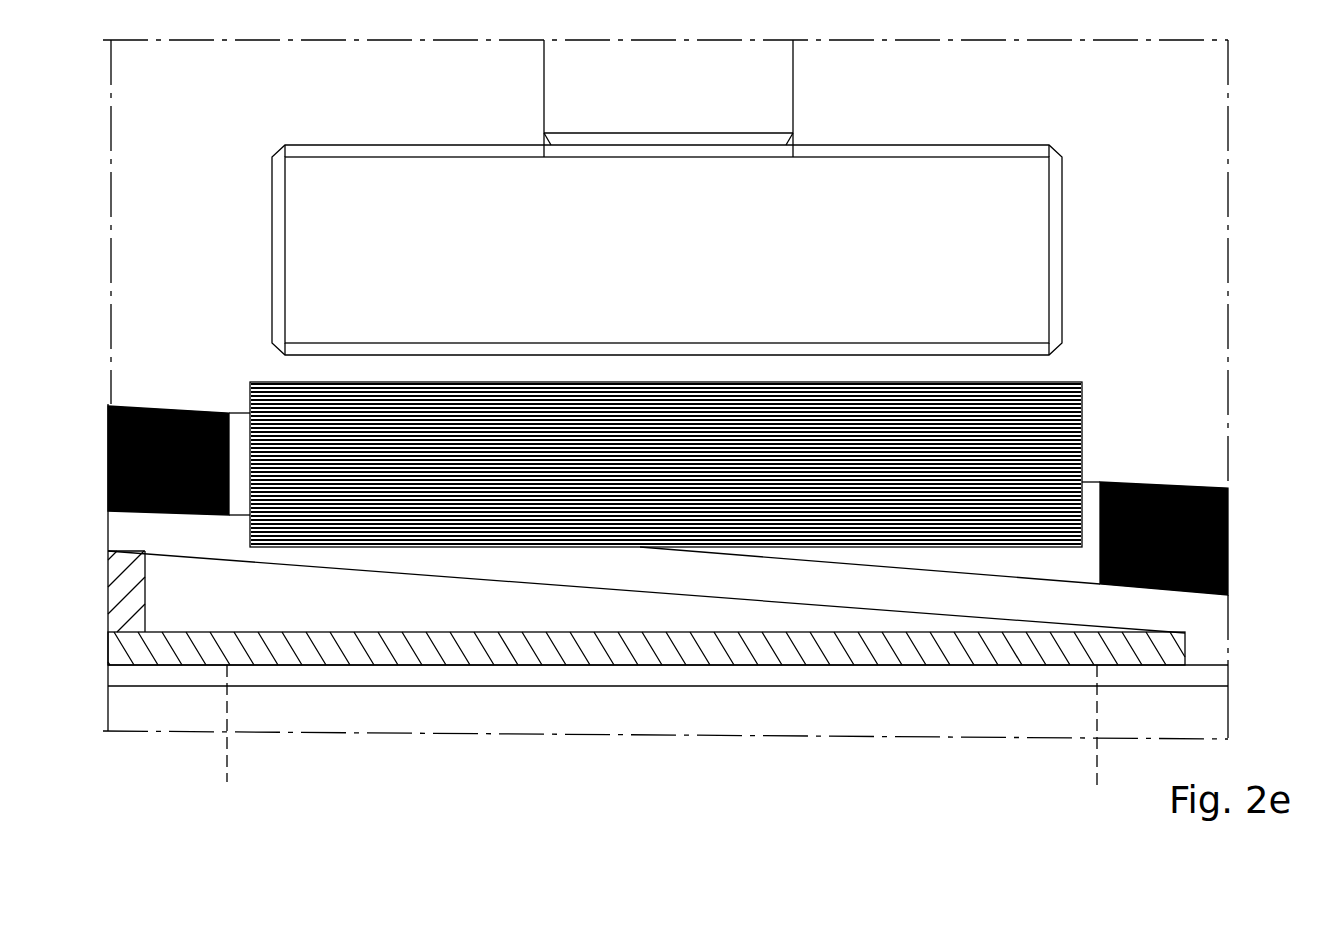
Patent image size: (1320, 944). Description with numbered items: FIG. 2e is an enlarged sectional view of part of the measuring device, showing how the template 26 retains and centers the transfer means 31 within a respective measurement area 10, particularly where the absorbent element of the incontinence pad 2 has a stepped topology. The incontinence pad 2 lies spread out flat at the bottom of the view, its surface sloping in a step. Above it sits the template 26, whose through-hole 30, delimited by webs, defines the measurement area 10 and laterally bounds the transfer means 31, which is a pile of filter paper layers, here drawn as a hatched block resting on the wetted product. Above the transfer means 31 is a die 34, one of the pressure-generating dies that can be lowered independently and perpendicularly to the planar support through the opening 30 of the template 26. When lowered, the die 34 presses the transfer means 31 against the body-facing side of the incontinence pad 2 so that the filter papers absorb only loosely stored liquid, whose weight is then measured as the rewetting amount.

The incontinence pad 2 is at (183, 665).
The measurement area 10 is at (1097, 776).
The template 26 is at (172, 405).
The through-hole 30 is at (1097, 502).
The transfer means 31 is at (1035, 418).
The die 34 is at (1022, 246).